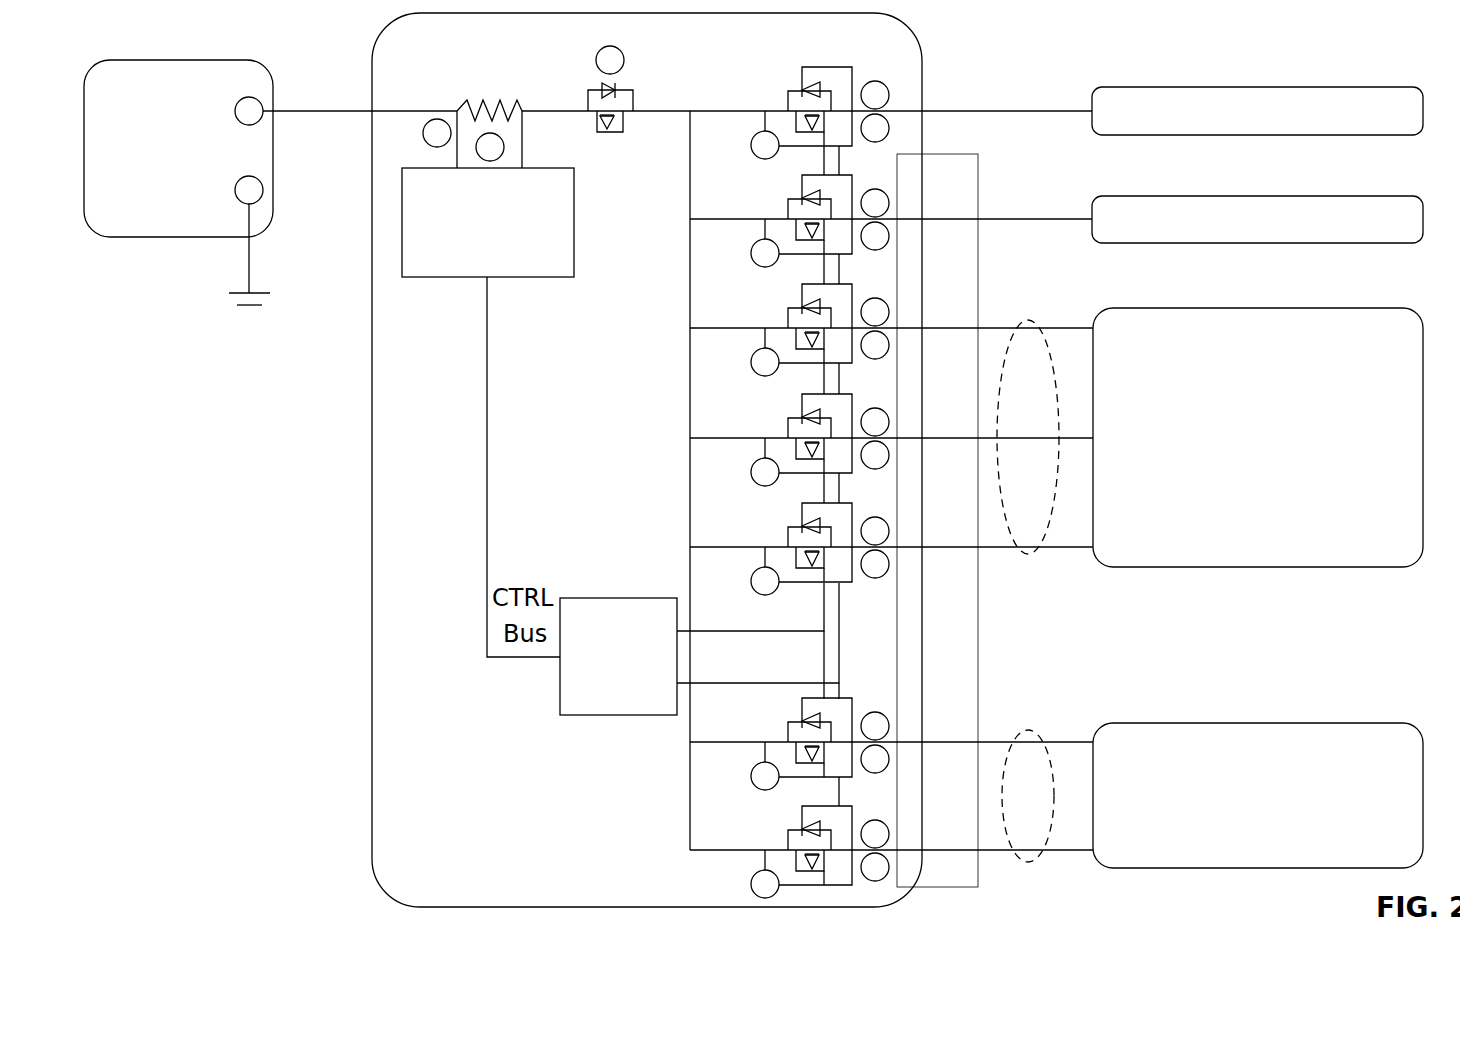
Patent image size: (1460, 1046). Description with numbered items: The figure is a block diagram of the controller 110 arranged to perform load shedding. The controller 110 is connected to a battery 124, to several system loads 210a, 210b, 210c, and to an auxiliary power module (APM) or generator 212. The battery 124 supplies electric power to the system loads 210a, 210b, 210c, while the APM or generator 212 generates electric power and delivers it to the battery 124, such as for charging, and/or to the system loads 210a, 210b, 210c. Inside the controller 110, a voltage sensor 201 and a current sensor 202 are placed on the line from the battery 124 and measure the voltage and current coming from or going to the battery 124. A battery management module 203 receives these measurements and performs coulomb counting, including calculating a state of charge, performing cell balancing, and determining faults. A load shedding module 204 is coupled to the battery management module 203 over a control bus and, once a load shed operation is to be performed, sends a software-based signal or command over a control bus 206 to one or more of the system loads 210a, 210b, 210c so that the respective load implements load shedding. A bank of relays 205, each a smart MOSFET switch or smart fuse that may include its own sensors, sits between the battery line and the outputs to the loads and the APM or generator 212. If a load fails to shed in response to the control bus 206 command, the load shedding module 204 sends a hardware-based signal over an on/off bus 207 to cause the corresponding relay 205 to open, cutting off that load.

The battery 124 is at (150, 59).
The controller 110 is at (372, 76).
The voltage sensor 201 is at (423, 136).
The current sensor 202 is at (503, 146).
The battery management module 203 is at (402, 222).
The load shedding module 204 is at (618, 597).
The relays 205 is at (827, 66).
The control bus 206 is at (707, 686).
The on/off bus 207 is at (702, 628).
The system load 210a is at (1340, 88).
The system load 210b is at (1340, 197).
The system load 210c is at (1340, 724).
The APM or generator 212 is at (1340, 309).